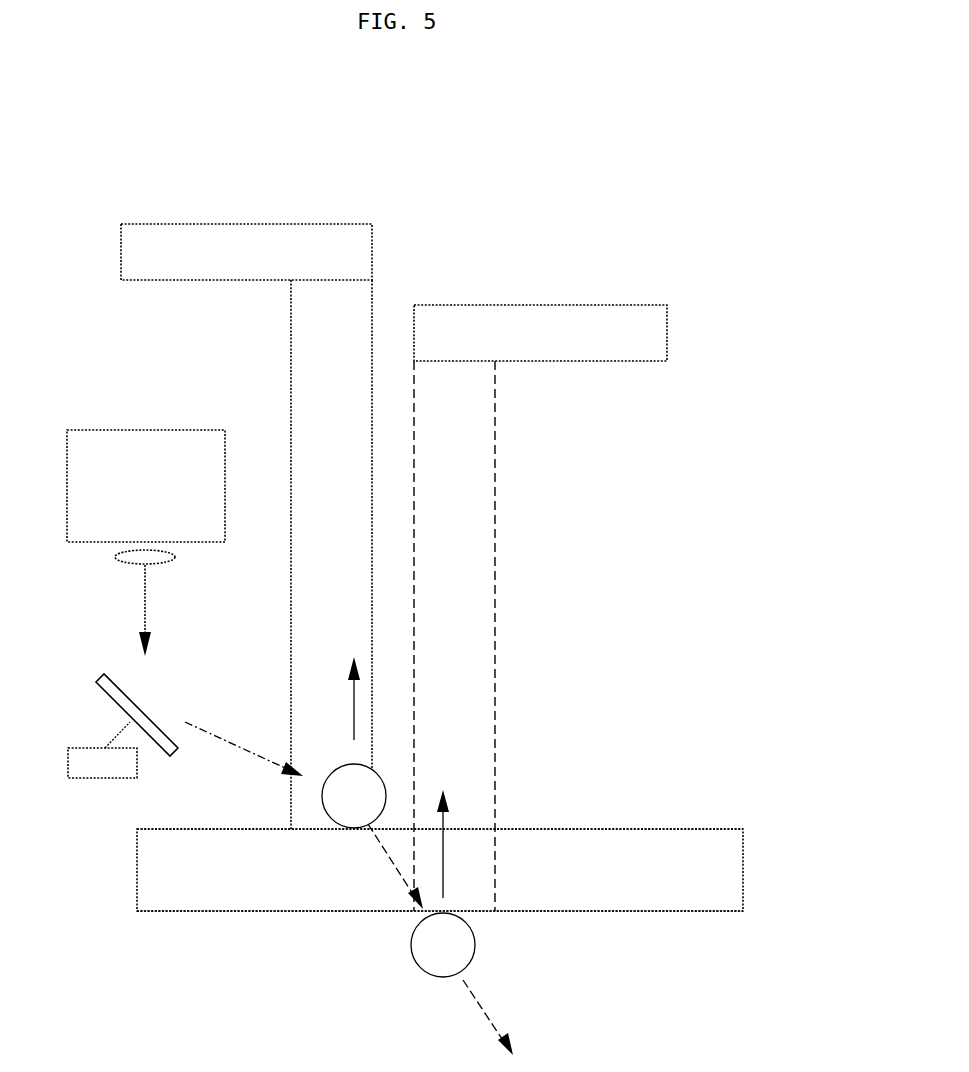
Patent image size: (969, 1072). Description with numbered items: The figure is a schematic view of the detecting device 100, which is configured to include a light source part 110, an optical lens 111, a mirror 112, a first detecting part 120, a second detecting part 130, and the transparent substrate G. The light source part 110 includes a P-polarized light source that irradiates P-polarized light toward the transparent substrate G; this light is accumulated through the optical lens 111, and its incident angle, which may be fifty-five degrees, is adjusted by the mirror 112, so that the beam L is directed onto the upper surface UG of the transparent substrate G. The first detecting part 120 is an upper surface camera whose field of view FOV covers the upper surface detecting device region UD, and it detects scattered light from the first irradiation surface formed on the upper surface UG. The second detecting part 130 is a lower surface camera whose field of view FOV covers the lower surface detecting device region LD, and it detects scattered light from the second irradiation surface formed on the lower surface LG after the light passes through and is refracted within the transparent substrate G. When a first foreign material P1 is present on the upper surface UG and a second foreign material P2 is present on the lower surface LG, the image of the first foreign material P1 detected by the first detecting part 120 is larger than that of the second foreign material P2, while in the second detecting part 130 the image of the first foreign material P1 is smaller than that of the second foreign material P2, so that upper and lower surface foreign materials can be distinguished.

The detecting device 100 is at (92, 156).
The light source part 110 is at (141, 430).
The optical lens 111 is at (118, 557).
The mirror 112 is at (98, 696).
The first detecting part 120 is at (241, 224).
The second detecting part 130 is at (537, 305).
The transparent substrate G is at (728, 870).
The upper surface UG is at (648, 828).
The lower surface LG is at (722, 913).
The first foreign material P1 is at (328, 826).
The second foreign material P2 is at (416, 967).
The laser beam L is at (226, 740).
The upper surface detecting device UD is at (293, 391).
The lower surface detecting device LD is at (483, 508).
The field of view FOV is at (372, 362).